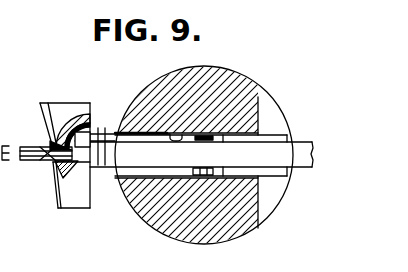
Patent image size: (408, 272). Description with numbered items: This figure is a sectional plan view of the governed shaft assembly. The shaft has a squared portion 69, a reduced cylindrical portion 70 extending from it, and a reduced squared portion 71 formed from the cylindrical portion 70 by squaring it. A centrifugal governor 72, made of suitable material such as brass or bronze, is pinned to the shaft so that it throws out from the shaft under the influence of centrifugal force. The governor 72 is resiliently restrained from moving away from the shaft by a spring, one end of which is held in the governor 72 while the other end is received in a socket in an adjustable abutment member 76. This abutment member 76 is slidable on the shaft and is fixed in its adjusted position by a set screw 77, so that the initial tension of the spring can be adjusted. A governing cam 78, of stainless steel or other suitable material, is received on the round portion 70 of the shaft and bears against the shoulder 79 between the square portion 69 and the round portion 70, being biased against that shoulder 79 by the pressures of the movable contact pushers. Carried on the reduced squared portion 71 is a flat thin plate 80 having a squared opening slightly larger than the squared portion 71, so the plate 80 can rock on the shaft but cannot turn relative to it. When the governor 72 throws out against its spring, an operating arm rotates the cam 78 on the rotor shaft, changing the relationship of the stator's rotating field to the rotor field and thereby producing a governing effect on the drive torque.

The squared portion 69 is at (101, 128).
The reduced cylindrical portion 70 is at (53, 166).
The reduced squared portion 71 is at (50, 146).
The centrifugal governor 72 is at (246, 96).
The adjustable abutment member 76 is at (11, 86).
The set screw 77 is at (7, 161).
The governing cam 78 is at (76, 200).
The shoulder 79 is at (92, 170).
The flat thin plate 80 is at (65, 146).